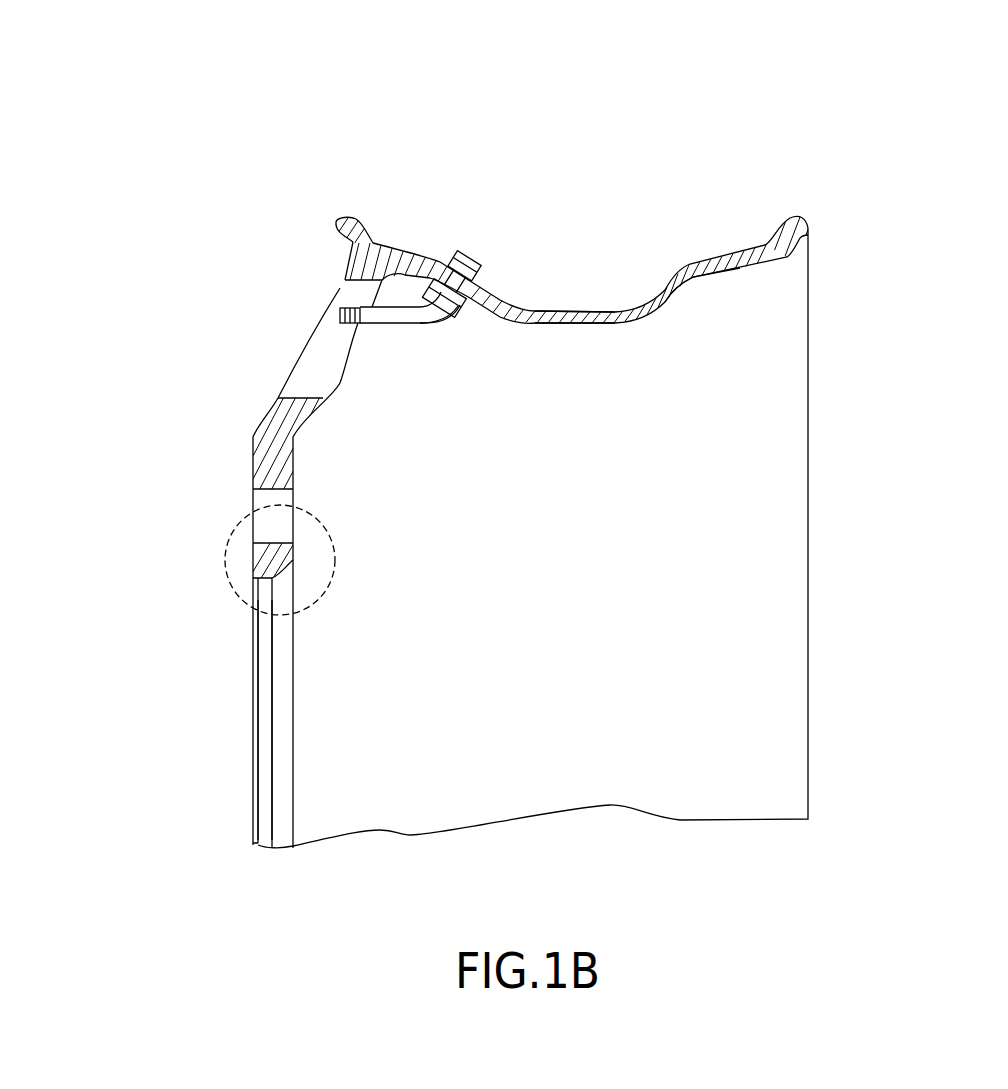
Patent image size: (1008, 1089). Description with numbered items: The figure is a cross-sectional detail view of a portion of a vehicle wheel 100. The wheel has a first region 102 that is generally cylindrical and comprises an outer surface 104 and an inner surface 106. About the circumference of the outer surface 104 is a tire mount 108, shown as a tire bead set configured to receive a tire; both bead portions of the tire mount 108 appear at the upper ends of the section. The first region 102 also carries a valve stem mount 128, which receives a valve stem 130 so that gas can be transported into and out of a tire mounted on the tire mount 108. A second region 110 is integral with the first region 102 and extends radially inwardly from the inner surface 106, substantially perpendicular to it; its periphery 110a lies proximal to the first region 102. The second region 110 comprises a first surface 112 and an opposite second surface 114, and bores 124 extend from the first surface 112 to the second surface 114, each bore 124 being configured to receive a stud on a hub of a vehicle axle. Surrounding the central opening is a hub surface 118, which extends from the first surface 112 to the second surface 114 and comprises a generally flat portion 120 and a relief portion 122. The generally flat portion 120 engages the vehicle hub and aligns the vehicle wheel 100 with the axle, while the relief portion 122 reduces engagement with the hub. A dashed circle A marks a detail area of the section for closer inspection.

The vehicle wheel 100 is at (268, 108).
The first region 102 is at (530, 311).
The outer surface 104 is at (617, 298).
The inner surface 106 is at (682, 305).
The tire mount 108 is at (374, 243).
The second region 110 is at (254, 400).
The periphery 110a is at (347, 300).
The first surface 112 is at (240, 459).
The second surface 114 is at (350, 390).
The hub surface 118 is at (147, 688).
The generally flat portion 120 is at (250, 688).
The relief portion 122 is at (274, 719).
The bores 124 is at (253, 503).
The valve stem mount 128 is at (453, 262).
The valve stem 130 is at (415, 318).
The detail circle A is at (330, 597).